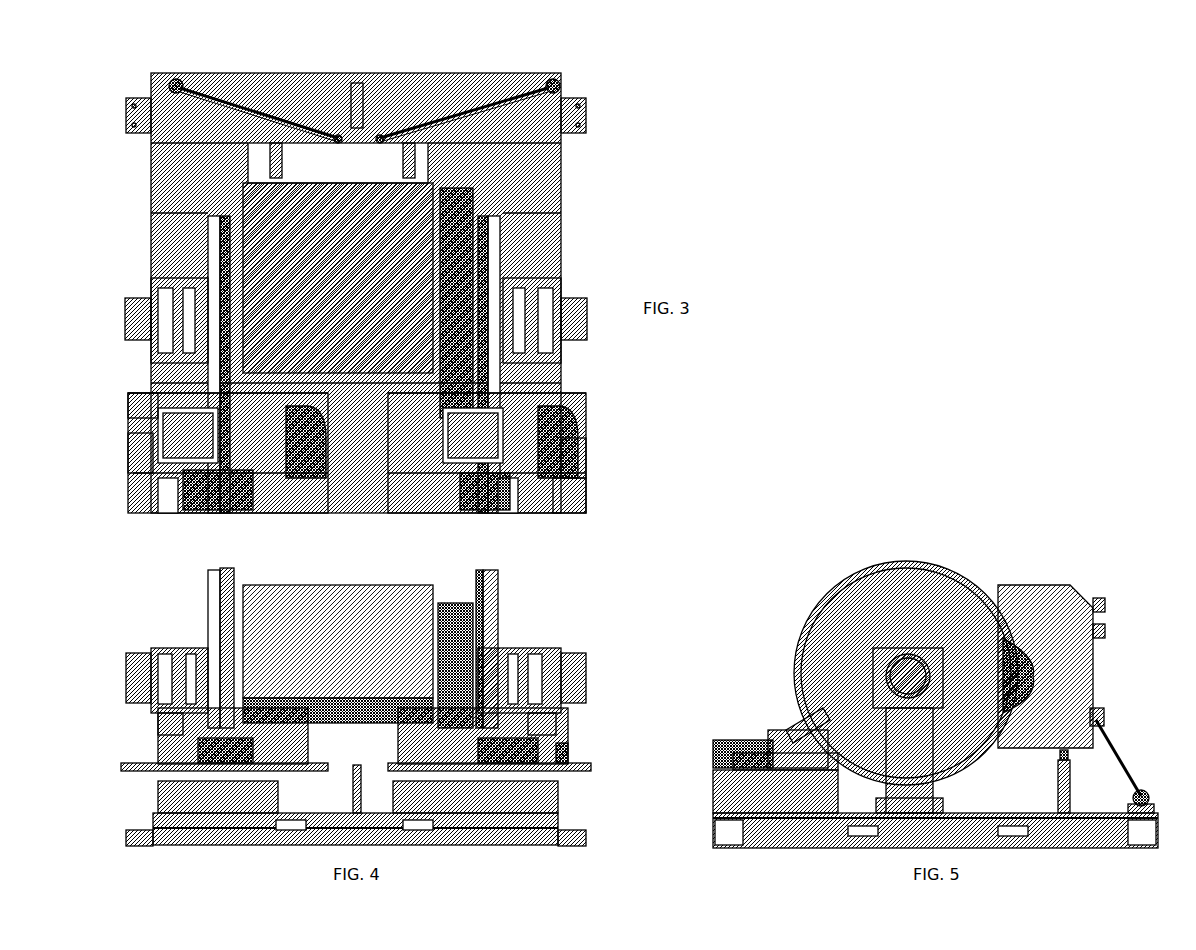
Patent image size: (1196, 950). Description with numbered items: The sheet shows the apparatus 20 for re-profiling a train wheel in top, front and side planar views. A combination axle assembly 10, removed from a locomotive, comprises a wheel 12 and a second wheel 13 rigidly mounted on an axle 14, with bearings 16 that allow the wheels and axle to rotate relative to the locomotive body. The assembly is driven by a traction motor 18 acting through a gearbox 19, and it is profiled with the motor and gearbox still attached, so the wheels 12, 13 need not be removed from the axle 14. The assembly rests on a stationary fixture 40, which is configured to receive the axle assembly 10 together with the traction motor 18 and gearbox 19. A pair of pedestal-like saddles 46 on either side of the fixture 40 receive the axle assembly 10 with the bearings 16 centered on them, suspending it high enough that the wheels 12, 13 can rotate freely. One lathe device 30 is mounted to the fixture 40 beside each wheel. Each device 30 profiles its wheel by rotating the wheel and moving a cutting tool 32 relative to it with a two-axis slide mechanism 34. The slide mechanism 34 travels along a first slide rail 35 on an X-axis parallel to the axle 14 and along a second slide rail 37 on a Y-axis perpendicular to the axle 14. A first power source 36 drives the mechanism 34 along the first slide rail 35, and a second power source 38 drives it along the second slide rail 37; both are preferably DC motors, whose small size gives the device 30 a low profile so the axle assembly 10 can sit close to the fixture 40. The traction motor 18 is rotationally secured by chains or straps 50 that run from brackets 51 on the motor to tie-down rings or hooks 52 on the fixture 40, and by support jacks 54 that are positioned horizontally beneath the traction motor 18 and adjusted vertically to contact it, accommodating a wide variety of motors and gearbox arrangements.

In FIG. 3, the combination axle assembly 10 is at (572, 348).
In FIG. 4, the combination axle assembly 10 is at (590, 670).
In FIG. 5, the combination axle assembly 10 is at (898, 553).
In FIG. 3, the wheel 12 is at (205, 222).
In FIG. 4, the wheel 12 is at (205, 578).
In FIG. 3, the second wheel 13 is at (492, 240).
In FIG. 4, the second wheel 13 is at (492, 585).
In FIG. 5, the second wheel 13 is at (825, 595).
In FIG. 3, the axle 14 is at (218, 252).
In FIG. 3, the bearings 16 is at (128, 292).
In FIG. 4, the bearings 16 is at (130, 645).
In FIG. 5, the bearings 16 is at (903, 645).
In FIG. 3, the traction motor 18 is at (330, 132).
In FIG. 4, the traction motor 18 is at (340, 577).
In FIG. 5, the traction motor 18 is at (1005, 577).
In FIG. 3, the gearbox 19 is at (456, 180).
In FIG. 4, the gearbox 19 is at (450, 595).
In FIG. 5, the gearbox 19 is at (1020, 675).
In FIG. 3, the apparatus 20 is at (625, 80).
In FIG. 4, the apparatus 20 is at (600, 560).
In FIG. 5, the apparatus 20 is at (1045, 525).
In FIG. 3, the device 30 is at (100, 445).
In FIG. 4, the device 30 is at (145, 740).
In FIG. 5, the device 30 is at (738, 710).
In FIG. 4, the cutting tool 32 is at (150, 712).
In FIG. 5, the cutting tool 32 is at (800, 705).
In FIG. 3, the slide mechanism 34 is at (130, 455).
In FIG. 3, the first slide rail 35 is at (125, 408).
In FIG. 3, the first power source 36 is at (575, 430).
In FIG. 4, the first power source 36 is at (345, 760).
In FIG. 5, the first power source 36 is at (770, 722).
In FIG. 3, the second slide rail 37 is at (160, 505).
In FIG. 3, the second power source 38 is at (210, 502).
In FIG. 4, the second power source 38 is at (230, 755).
In FIG. 5, the second power source 38 is at (708, 740).
In FIG. 3, the fixture 40 is at (553, 140).
In FIG. 4, the fixture 40 is at (540, 837).
In FIG. 5, the fixture 40 is at (1072, 840).
In FIG. 5, the saddles 46 is at (930, 775).
In FIG. 3, the straps 50 is at (250, 105).
In FIG. 5, the straps 50 is at (1112, 745).
In FIG. 3, the brackets 51 is at (325, 126).
In FIG. 5, the brackets 51 is at (1096, 705).
In FIG. 3, the tie-down rings 52 is at (165, 74).
In FIG. 5, the tie-down rings 52 is at (1142, 788).
In FIG. 5, the support jacks 54 is at (1062, 768).